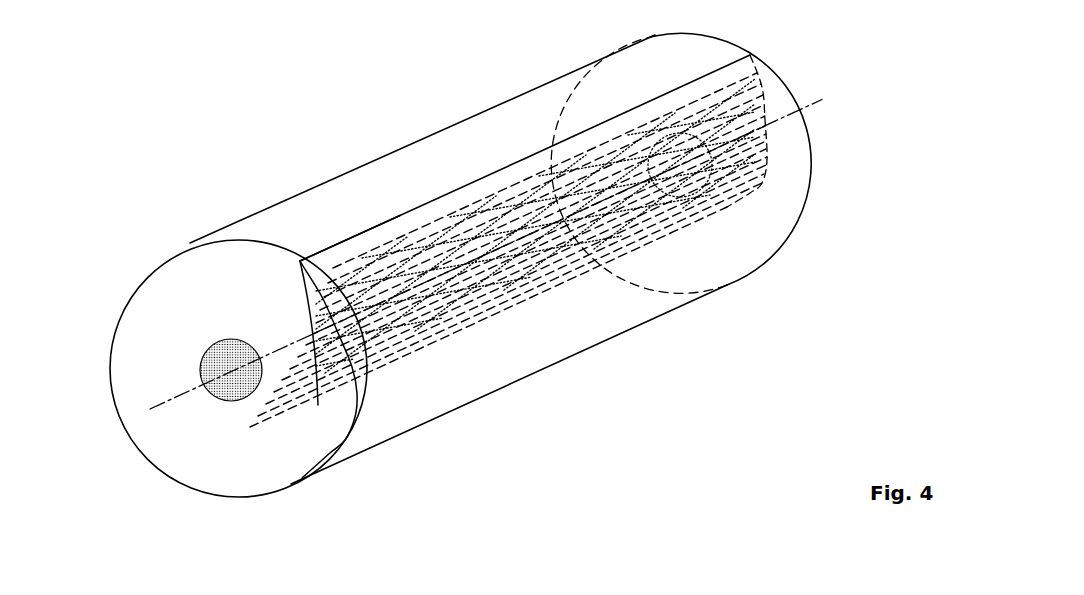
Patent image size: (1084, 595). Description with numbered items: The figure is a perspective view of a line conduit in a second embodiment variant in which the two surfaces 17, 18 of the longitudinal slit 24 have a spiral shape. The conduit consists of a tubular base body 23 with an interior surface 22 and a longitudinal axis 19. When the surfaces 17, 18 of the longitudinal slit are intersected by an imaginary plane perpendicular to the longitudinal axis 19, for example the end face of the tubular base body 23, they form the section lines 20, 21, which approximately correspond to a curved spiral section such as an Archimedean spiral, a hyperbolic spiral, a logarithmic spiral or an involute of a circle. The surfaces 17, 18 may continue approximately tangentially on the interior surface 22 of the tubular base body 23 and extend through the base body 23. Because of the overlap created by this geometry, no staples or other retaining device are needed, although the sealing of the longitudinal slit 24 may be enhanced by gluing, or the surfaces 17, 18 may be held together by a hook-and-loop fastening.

The surface of the longitudinal slit 17 is at (304, 281).
The surface of the longitudinal slit 18 is at (318, 303).
The longitudinal axis 19 is at (819, 97).
The section line 20 is at (312, 264).
The section line 21 is at (312, 264).
The interior surface 22 is at (250, 377).
The tubular base body 23 is at (508, 122).
The longitudinal slit 24 is at (458, 187).